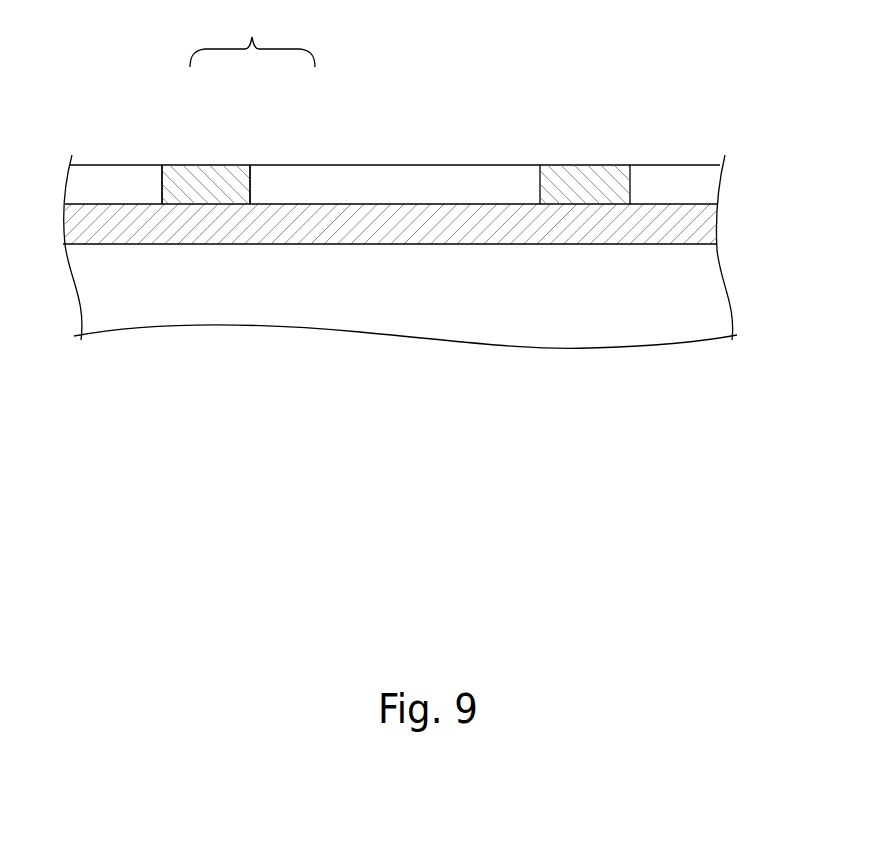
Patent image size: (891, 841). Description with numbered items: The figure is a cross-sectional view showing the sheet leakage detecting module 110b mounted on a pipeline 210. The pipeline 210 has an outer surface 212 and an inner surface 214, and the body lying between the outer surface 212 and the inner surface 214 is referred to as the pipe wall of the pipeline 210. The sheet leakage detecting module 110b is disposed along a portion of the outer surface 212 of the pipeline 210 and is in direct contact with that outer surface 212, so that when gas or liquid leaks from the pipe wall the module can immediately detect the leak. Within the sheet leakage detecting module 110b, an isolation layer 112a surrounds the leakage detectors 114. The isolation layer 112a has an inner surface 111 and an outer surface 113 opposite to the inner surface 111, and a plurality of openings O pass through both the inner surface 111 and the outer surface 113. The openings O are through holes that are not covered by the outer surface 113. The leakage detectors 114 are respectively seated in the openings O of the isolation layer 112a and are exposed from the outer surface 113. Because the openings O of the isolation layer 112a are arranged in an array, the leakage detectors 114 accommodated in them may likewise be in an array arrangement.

The sheet leakage detecting module 110b is at (252, 35).
The inner surface 111 is at (350, 182).
The isolation layer 112a is at (278, 190).
The outer surface 113 is at (93, 150).
The leakage detectors 114 is at (220, 190).
The openings O is at (150, 172).
The pipeline 210 is at (710, 292).
The outer surface 212 is at (663, 186).
The inner surface 214 is at (667, 262).